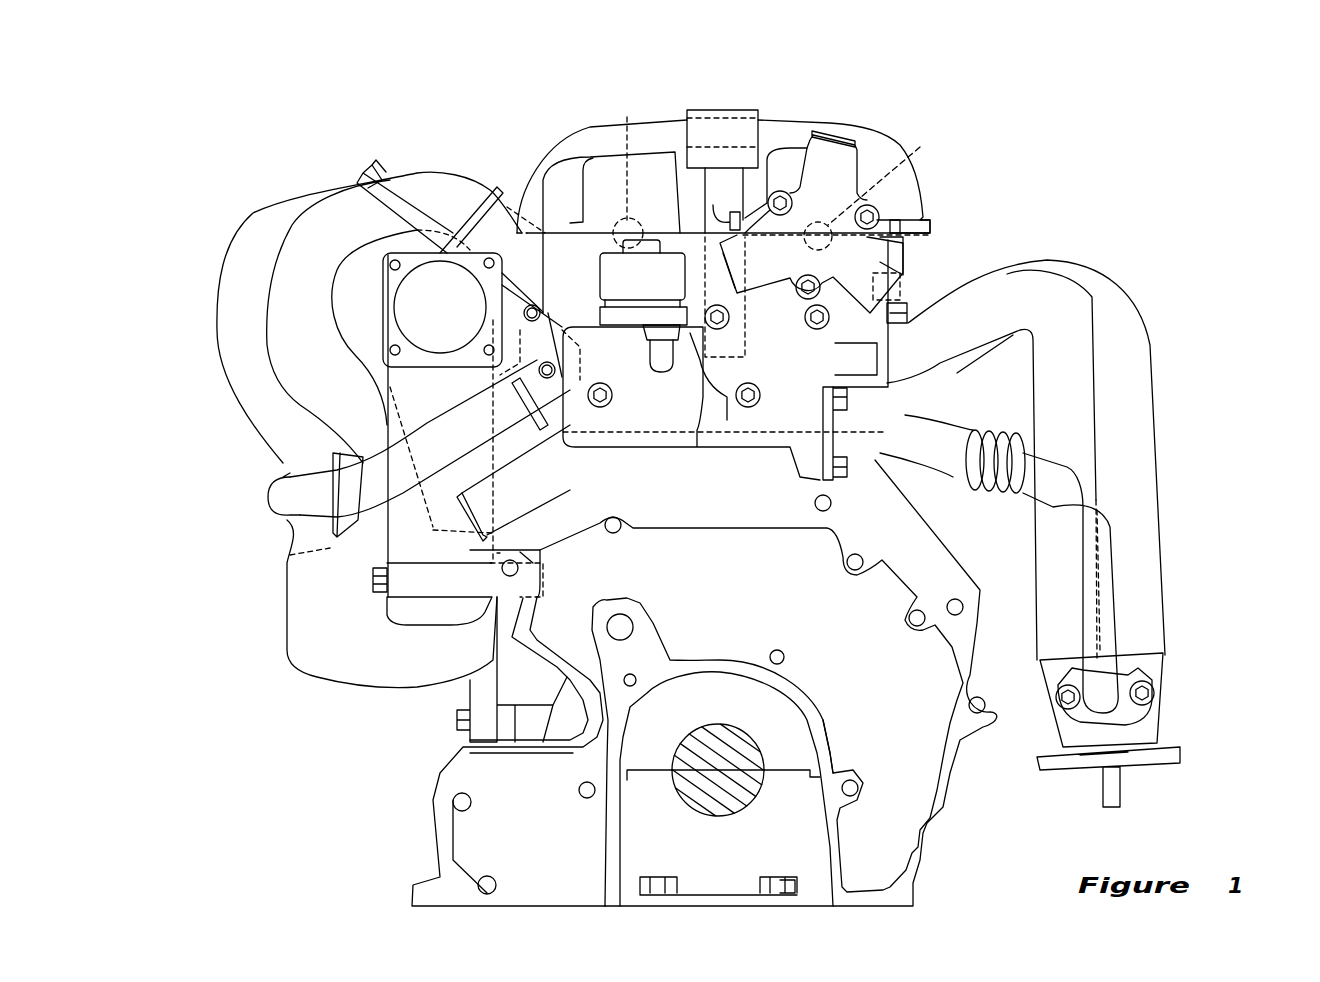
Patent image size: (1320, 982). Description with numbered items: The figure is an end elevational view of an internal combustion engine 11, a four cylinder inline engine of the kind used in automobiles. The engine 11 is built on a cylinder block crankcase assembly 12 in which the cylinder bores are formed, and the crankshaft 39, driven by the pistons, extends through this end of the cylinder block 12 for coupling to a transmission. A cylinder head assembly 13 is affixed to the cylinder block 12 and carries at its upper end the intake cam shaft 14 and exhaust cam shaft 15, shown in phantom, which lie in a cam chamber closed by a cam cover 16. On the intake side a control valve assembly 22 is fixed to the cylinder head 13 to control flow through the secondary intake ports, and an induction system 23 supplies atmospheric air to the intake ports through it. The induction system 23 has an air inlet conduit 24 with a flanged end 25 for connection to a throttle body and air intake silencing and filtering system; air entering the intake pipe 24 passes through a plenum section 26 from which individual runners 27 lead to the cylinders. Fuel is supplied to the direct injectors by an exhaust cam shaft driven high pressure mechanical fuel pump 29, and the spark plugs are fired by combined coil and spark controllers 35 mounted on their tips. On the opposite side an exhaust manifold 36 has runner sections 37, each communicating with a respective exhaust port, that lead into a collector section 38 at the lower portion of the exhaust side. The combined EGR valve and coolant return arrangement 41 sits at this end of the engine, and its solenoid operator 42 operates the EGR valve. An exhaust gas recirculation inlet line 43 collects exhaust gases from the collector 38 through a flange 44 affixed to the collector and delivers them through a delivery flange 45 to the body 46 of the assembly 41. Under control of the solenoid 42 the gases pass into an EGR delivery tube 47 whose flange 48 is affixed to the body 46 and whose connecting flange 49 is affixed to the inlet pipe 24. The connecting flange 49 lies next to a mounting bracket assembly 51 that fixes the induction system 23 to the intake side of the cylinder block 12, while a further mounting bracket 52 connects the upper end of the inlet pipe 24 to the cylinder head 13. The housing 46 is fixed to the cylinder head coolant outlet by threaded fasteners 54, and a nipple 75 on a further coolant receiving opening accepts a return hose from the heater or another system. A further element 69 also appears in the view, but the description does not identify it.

The internal combustion engine 11 is at (968, 192).
The cylinder block crankcase assembly 12 is at (930, 565).
The cylinder head assembly 13 is at (907, 253).
The intake cam shaft 14 is at (624, 168).
The exhaust cam shaft 15 is at (885, 192).
The cam cover 16 is at (880, 130).
The control valve assembly 22 is at (507, 207).
The induction system 23 is at (240, 245).
The air inlet conduit 24 is at (383, 413).
The flanged end 25 is at (393, 278).
The plenum section 26 is at (307, 622).
The individual runners 27 is at (290, 190).
The high pressure mechanical fuel pump 29 is at (818, 177).
The combined coil and spark controllers 35 is at (727, 110).
The exhaust manifold 36 is at (1160, 343).
The runner sections 37 is at (1077, 293).
The collector section 38 is at (1150, 727).
The crankshaft 39 is at (740, 753).
The combined EGR valve and coolant return arrangement 41 is at (657, 397).
The solenoid operator 42 is at (597, 280).
The exhaust gas recirculation inlet line 43 is at (1067, 470).
The flange 44 is at (1127, 670).
The delivery flange 45 is at (893, 400).
The body 46 is at (717, 440).
The EGR delivery tube 47 is at (303, 473).
The flange 48 is at (517, 397).
The connecting flange 49 is at (323, 533).
The mounting bracket assembly 51 is at (477, 697).
The mounting bracket 52 is at (535, 420).
The threaded fasteners 54 is at (597, 407).
The support plate 69 is at (520, 513).
The nipple 75 is at (887, 357).